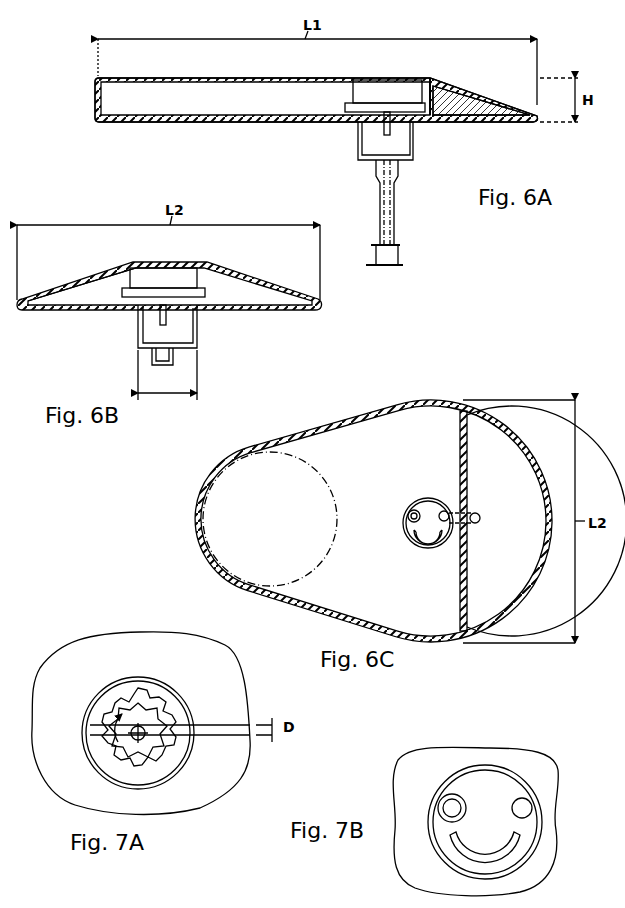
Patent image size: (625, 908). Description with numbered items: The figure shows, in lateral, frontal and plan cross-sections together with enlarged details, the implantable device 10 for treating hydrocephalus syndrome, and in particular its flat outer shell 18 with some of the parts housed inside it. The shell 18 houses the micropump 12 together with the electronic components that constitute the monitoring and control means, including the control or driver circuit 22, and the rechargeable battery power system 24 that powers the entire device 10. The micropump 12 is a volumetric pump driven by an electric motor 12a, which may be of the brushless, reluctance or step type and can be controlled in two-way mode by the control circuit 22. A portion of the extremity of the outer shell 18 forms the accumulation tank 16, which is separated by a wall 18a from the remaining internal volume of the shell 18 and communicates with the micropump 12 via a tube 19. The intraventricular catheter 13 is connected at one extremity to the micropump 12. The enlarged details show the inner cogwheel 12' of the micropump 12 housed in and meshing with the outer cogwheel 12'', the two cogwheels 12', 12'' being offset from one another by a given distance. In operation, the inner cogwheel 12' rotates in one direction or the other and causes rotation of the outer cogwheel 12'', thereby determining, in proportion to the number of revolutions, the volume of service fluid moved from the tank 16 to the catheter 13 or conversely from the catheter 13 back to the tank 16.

In FIG. 6A, the implantable device 10 is at (274, 163).
In FIG. 6A, the micropump 12 is at (364, 119).
In FIG. 6B, the micropump 12 is at (144, 362).
In FIG. 7A, the micropump 12 is at (127, 727).
In FIG. 7A, the inner cogwheel 12' is at (158, 722).
In FIG. 7A, the outer cogwheel 12'' is at (173, 731).
In FIG. 6A, the electric motor 12a is at (345, 110).
In FIG. 6B, the electric motor 12a is at (200, 300).
In FIG. 6A, the intraventricular catheter 13 is at (378, 196).
In FIG. 6C, the intraventricular catheter 13 is at (405, 512).
In FIG. 7B, the intraventricular catheter 13 is at (445, 808).
In FIG. 6A, the accumulation tank 16 is at (486, 100).
In FIG. 6C, the accumulation tank 16 is at (509, 556).
In FIG. 6A, the flat outer shell 18 is at (98, 96).
In FIG. 6B, the flat outer shell 18 is at (258, 284).
In FIG. 6C, the flat outer shell 18 is at (523, 447).
In FIG. 7A, the flat outer shell 18 is at (186, 659).
In FIG. 7B, the flat outer shell 18 is at (441, 773).
In FIG. 6A, the wall 18a is at (434, 82).
In FIG. 6B, the wall 18a is at (73, 290).
In FIG. 6C, the wall 18a is at (460, 446).
In FIG. 6C, the tube 19 is at (471, 513).
In FIG. 7B, the tube 19 is at (533, 808).
In FIG. 6A, the control circuit 22 is at (376, 85).
In FIG. 6B, the control circuit 22 is at (137, 273).
In FIG. 6C, the power system 24 is at (260, 471).